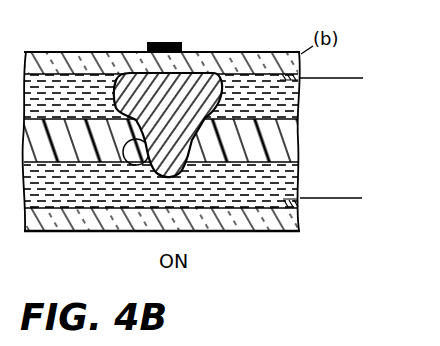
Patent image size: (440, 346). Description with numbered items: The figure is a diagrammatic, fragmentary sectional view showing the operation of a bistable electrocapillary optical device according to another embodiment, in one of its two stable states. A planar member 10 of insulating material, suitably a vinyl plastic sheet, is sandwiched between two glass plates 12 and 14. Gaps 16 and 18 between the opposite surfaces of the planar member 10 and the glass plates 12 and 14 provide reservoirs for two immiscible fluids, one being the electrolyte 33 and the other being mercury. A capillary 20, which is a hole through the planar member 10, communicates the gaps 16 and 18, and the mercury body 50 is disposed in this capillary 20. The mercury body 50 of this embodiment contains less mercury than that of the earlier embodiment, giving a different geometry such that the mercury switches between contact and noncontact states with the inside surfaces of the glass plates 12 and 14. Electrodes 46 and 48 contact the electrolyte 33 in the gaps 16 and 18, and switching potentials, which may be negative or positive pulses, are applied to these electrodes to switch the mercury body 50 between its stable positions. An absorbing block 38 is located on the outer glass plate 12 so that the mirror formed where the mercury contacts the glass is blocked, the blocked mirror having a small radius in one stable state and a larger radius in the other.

The planar member 10 is at (239, 122).
The glass plate 12 is at (201, 52).
The glass plate 14 is at (235, 232).
The gap 16 is at (298, 100).
The gap 18 is at (298, 183).
The capillary 20 is at (124, 161).
The electrolyte 33 is at (54, 78).
The absorbing block 38 is at (157, 41).
The electrode 46 is at (303, 78).
The electrode 48 is at (303, 203).
The mercury body 50 is at (152, 165).